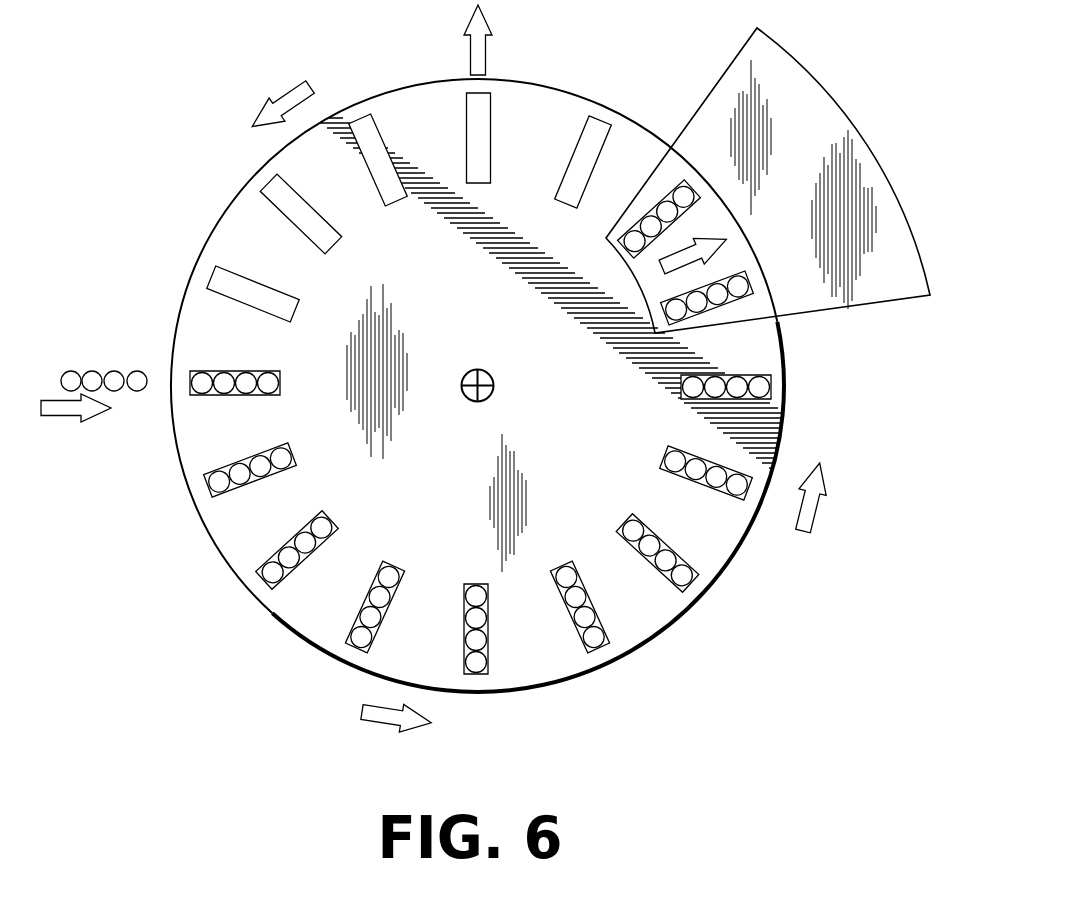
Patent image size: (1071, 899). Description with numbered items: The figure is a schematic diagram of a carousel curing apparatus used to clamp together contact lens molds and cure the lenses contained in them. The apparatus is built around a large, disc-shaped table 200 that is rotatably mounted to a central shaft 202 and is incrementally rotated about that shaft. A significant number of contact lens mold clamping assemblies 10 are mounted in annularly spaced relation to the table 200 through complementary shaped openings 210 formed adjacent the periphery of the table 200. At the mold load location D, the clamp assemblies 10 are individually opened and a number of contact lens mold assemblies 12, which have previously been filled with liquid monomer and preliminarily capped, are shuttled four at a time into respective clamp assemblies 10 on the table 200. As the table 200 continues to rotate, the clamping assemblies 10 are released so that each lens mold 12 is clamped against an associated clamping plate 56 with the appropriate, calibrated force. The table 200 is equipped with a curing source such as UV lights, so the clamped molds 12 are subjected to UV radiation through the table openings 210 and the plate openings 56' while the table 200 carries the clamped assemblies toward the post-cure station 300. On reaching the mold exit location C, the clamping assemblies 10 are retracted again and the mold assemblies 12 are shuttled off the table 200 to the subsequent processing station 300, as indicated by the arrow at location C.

The table 200 is at (545, 83).
The central shaft 202 is at (471, 400).
The openings 210 is at (327, 547).
The post-cure station 300 is at (720, 80).
The clamping assembly 10 is at (226, 372).
The mold assemblies 12 is at (93, 371).
The clamping plate 56 is at (283, 538).
The plate openings 56' is at (264, 447).
The mold exit location C is at (662, 267).
The mold load location D is at (220, 398).